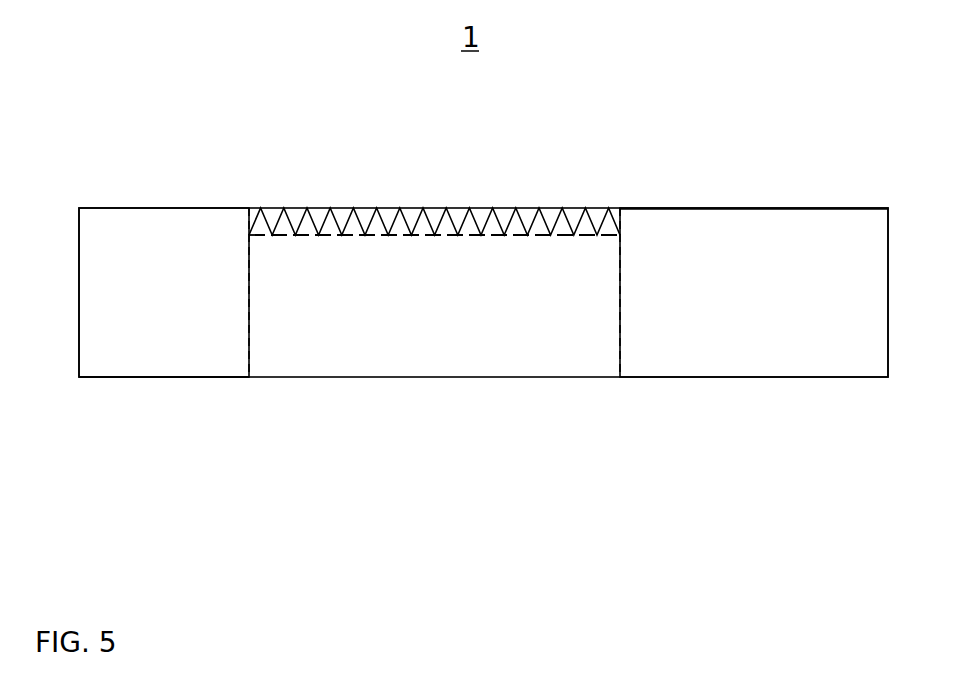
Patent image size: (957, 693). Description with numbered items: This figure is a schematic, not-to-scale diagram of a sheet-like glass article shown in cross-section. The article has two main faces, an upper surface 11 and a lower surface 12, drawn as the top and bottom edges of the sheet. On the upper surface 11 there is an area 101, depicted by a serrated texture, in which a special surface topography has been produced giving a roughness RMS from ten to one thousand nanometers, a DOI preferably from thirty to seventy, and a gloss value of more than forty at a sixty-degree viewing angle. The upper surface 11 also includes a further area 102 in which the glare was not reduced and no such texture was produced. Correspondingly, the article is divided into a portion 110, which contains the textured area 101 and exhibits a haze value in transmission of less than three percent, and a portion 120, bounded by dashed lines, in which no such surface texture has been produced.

The upper surface 11 is at (197, 208).
The lower surface 12 is at (183, 377).
The surface area 101 is at (620, 237).
The further surface area 102 is at (888, 208).
The portion 110 is at (620, 378).
The portion 120 is at (888, 378).